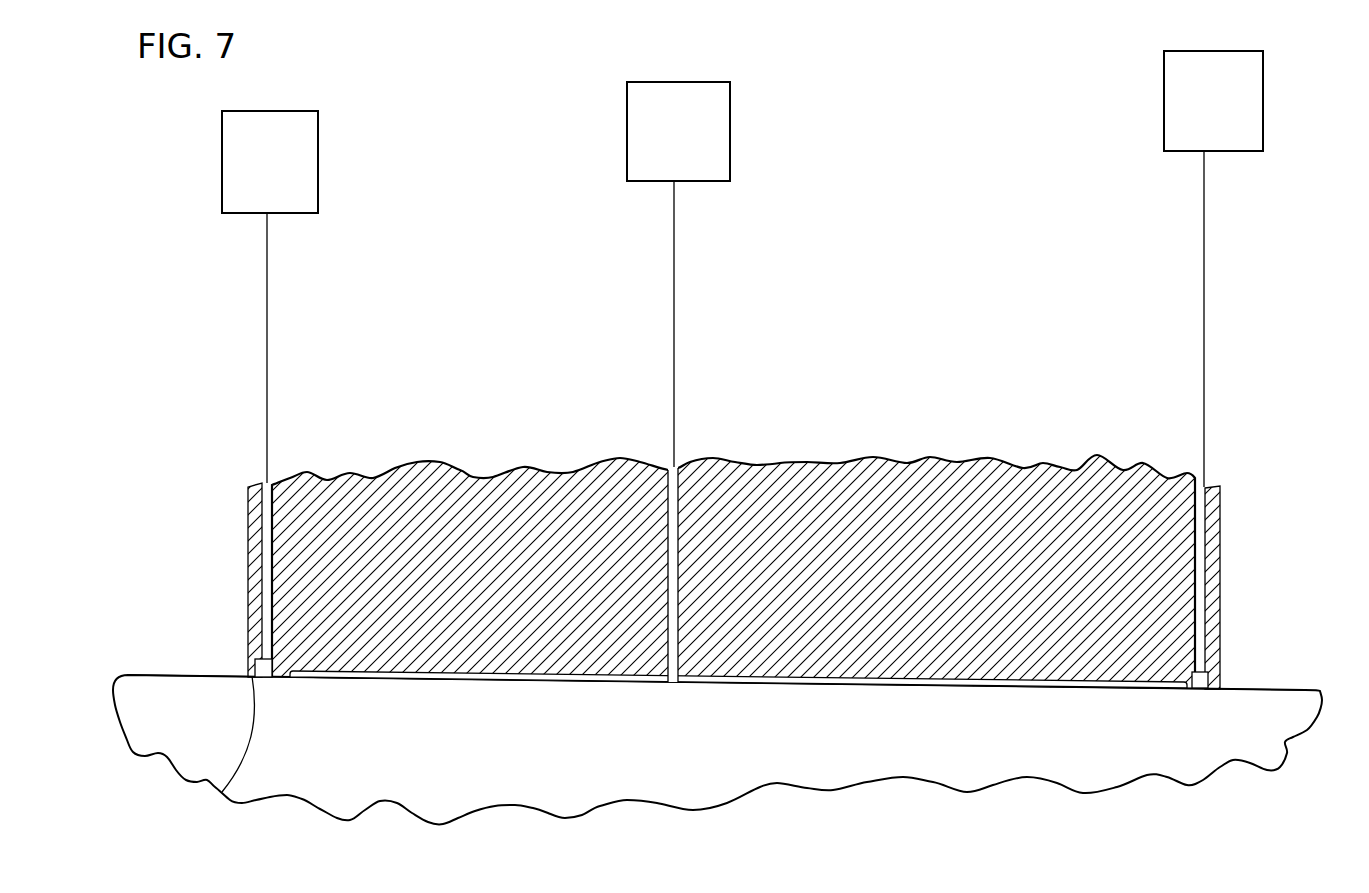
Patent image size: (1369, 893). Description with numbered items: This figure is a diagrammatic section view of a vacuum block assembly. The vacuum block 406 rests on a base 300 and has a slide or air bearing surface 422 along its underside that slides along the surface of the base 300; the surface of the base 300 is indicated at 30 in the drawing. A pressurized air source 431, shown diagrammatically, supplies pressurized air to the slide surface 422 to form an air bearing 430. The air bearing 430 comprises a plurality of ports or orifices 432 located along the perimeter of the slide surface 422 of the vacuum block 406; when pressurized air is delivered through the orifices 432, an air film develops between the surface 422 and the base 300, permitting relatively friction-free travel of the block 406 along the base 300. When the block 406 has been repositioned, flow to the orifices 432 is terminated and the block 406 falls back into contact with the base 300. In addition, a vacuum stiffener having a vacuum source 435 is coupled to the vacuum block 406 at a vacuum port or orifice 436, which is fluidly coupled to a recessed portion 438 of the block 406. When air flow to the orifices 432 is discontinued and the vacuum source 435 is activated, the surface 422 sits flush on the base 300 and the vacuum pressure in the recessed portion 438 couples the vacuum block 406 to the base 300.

The substrate surface 30 is at (1273, 688).
The base 300 is at (438, 777).
The vacuum block 406 is at (1017, 460).
The slide surface 422 is at (222, 792).
The air bearing 430 is at (235, 662).
The pressurized air source 431 is at (318, 165).
The orifices 432 is at (288, 528).
The vacuum source 435 is at (730, 137).
The vacuum orifice 436 is at (672, 486).
The recessed portion 438 is at (690, 675).